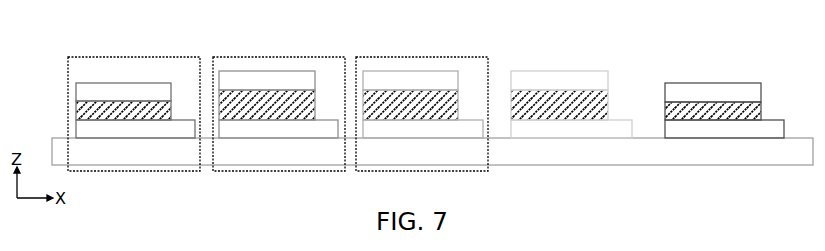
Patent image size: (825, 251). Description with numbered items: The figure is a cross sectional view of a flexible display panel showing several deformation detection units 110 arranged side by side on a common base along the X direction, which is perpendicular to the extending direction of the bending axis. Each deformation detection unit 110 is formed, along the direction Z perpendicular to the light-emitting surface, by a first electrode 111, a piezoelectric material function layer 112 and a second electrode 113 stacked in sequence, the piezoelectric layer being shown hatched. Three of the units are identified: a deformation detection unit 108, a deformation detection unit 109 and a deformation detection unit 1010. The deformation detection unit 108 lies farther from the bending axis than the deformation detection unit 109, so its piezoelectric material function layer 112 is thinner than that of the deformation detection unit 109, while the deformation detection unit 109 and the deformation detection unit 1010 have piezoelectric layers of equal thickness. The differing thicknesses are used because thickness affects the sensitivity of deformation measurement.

The deformation detection unit 108 is at (120, 93).
The deformation detection unit 109 is at (299, 57).
The deformation detection unit 1010 is at (443, 57).
The deformation detection unit 110 is at (266, 92).
The first electrode 111 is at (85, 127).
The piezoelectric material function layer 112 is at (77, 110).
The second electrode 113 is at (85, 91).